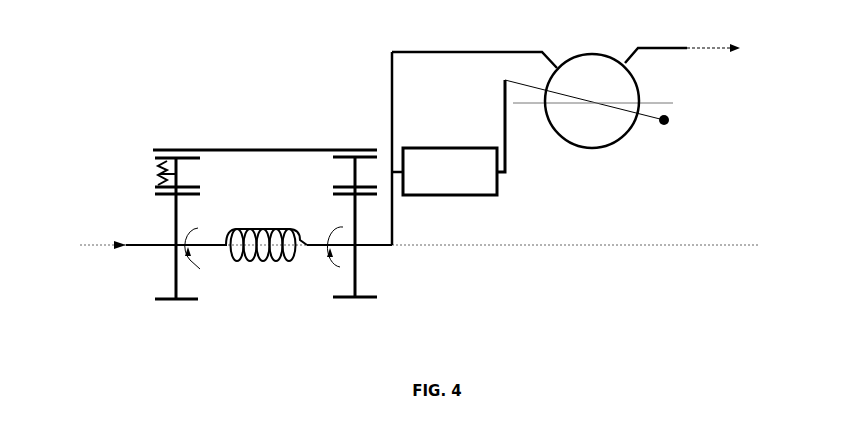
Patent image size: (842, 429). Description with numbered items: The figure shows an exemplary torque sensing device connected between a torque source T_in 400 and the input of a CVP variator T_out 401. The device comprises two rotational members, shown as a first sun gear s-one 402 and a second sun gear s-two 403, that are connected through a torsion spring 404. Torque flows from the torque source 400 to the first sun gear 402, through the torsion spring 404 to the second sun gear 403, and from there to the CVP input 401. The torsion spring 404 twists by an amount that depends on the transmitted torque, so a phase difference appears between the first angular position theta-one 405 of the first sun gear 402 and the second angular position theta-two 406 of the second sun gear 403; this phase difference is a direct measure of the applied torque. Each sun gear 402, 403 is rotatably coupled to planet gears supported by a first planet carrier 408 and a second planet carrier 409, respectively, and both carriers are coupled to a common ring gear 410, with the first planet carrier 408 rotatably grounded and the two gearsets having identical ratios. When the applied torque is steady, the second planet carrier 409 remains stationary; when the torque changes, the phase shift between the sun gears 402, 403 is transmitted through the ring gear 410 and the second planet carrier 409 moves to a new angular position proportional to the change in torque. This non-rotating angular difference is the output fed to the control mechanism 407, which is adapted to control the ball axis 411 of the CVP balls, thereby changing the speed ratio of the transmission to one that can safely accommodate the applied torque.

The torque source T_in 400 is at (77, 225).
The input of CVP variator T_out 401 is at (740, 73).
The sun gear s1 402 is at (142, 203).
The sun gear s2 403 is at (377, 208).
The torsion spring 404 is at (267, 297).
The angular position Θ1 405 is at (183, 232).
The angular position Θ2 406 is at (350, 225).
The control mechanism 407 is at (470, 190).
The planet carrier c1 408 is at (142, 178).
The planet carrier c2 409 is at (375, 183).
The ring gear 410 is at (170, 128).
The ball axis 411 is at (505, 80).